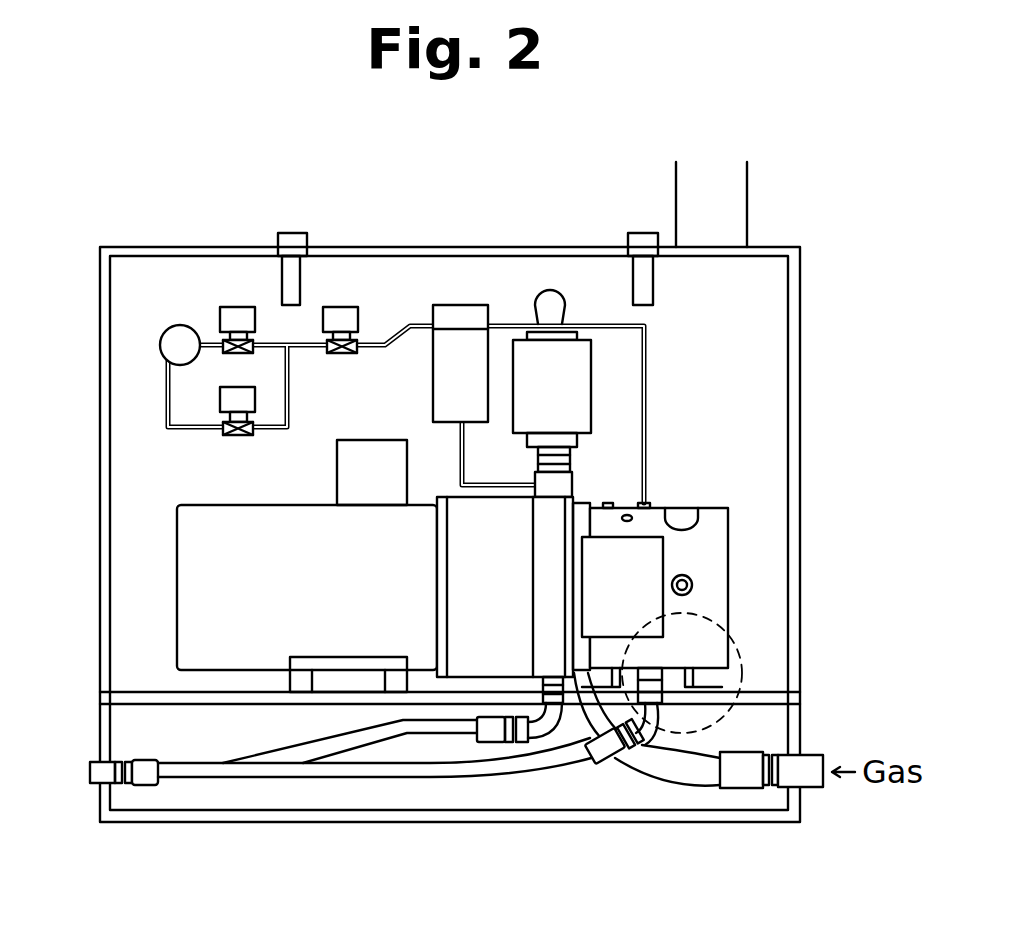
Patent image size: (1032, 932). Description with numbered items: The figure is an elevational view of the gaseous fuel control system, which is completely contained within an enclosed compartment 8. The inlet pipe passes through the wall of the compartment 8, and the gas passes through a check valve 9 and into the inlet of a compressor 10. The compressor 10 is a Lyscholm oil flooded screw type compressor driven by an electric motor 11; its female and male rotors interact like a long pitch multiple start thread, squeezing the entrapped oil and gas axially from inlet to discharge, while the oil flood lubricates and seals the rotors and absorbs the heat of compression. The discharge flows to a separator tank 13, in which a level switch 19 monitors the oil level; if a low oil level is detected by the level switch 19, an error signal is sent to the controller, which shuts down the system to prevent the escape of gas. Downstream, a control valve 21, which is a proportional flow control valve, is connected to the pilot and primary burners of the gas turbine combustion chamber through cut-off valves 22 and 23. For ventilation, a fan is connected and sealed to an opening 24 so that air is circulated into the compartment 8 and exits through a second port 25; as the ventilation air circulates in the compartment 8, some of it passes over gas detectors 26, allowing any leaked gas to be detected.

The compartment 8 is at (800, 383).
The check valve 9 is at (540, 352).
The compressor 10 is at (478, 658).
The electric motor 11 is at (186, 581).
The separator tank 13 is at (728, 548).
The level switch 19 is at (455, 313).
The control valve 21 is at (348, 313).
The cut-off valve 22 is at (232, 313).
The cut-off valve 23 is at (227, 400).
The opening 24 is at (740, 641).
The second port 25 is at (737, 203).
The gas detectors 26 is at (282, 236).